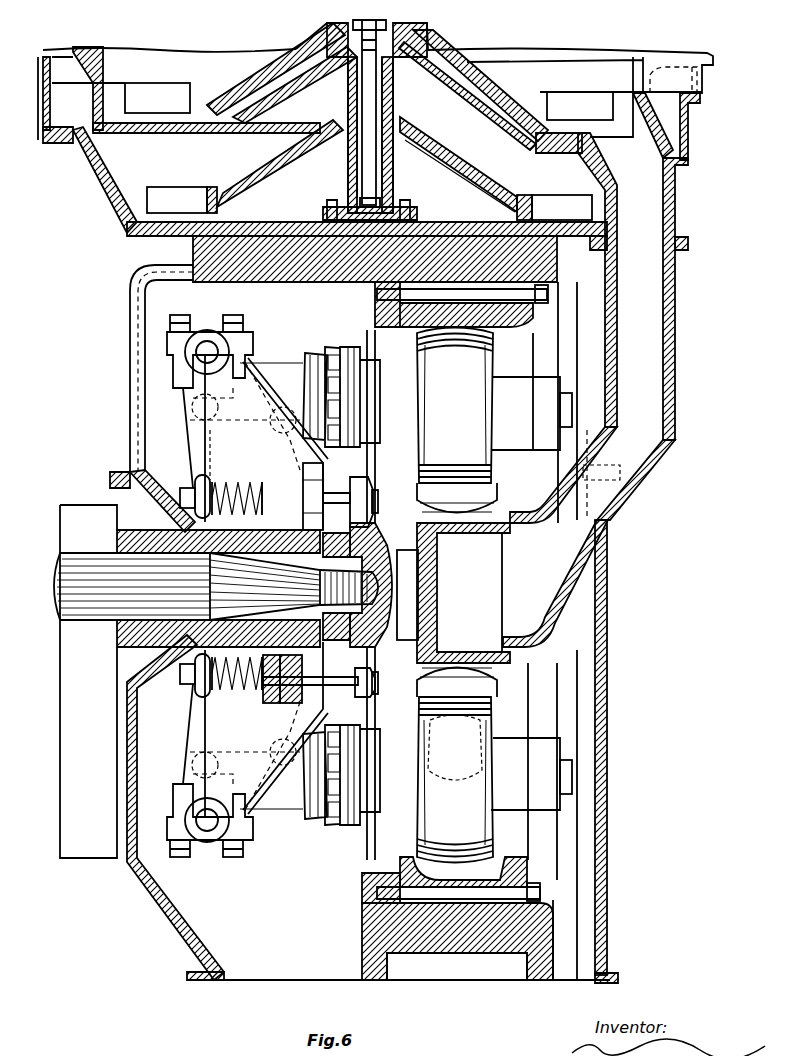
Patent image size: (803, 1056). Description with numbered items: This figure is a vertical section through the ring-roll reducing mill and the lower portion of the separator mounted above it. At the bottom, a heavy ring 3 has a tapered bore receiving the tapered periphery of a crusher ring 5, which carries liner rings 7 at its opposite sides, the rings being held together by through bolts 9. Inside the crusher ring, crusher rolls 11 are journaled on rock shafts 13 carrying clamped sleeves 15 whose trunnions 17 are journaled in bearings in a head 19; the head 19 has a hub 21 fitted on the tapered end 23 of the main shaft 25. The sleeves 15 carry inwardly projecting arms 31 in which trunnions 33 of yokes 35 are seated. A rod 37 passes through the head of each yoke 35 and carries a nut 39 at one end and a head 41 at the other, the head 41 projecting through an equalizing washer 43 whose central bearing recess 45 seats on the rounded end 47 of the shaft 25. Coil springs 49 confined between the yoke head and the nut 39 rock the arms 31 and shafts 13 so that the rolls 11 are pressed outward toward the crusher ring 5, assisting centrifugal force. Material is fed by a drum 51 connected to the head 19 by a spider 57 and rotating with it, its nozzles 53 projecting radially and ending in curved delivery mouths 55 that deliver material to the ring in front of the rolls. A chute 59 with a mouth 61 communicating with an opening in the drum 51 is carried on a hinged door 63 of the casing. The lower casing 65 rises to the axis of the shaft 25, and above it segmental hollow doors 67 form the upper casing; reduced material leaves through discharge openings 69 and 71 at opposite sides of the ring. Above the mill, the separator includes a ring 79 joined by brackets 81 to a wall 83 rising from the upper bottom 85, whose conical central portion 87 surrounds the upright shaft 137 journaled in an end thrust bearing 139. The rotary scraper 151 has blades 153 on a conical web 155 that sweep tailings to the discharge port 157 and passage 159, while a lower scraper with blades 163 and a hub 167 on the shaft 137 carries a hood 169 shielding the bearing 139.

The heavy ring 3 is at (553, 928).
The crusher ring 5 is at (480, 876).
The liner rings 7 is at (375, 877).
The through bolts 9 is at (455, 289).
The crusher rolls 11 is at (480, 362).
The rock shafts 13 is at (333, 350).
The sleeves 15 is at (274, 363).
The trunnions 17 is at (208, 347).
The head 19 is at (190, 434).
The hub 21 is at (237, 667).
The tapered end 23 is at (272, 665).
The main shaft 25 is at (105, 632).
The inwardly projecting arms 31 is at (192, 447).
The trunnions 33 is at (180, 497).
The yokes 35 is at (303, 472).
The rod 37 is at (337, 492).
The nut 39 is at (193, 485).
The head 41 is at (373, 494).
The equalizing washer 43 is at (380, 643).
The central bearing recess 45 is at (384, 548).
The rounded end 47 is at (407, 595).
The coil springs 49 is at (254, 480).
The drum 51 is at (500, 613).
The nozzles 53 is at (492, 482).
The curved delivery mouths 55 is at (505, 775).
The spider 57 is at (372, 520).
The chute 59 is at (653, 455).
The mouth 61 is at (512, 581).
The door 63 is at (607, 634).
The lower casing 65 is at (182, 922).
The hollow doors 67 is at (153, 433).
The discharge opening 69 is at (290, 973).
The discharge opening 71 is at (575, 978).
The ring 79 is at (690, 122).
The brackets 81 is at (62, 128).
The wall 83 is at (95, 152).
The upper bottom 85 is at (165, 135).
The conical central portion 87 is at (276, 99).
The upright shaft 137 is at (412, 35).
The end thrust bearing 139 is at (347, 182).
The rotary scraper 151 is at (210, 93).
The blades 153 is at (135, 93).
The conical web 155 is at (240, 92).
The discharge port 157 is at (625, 140).
The discharge passage 159 is at (653, 198).
The blades 163 is at (182, 196).
The hub 167 is at (385, 102).
The hood 169 is at (398, 148).